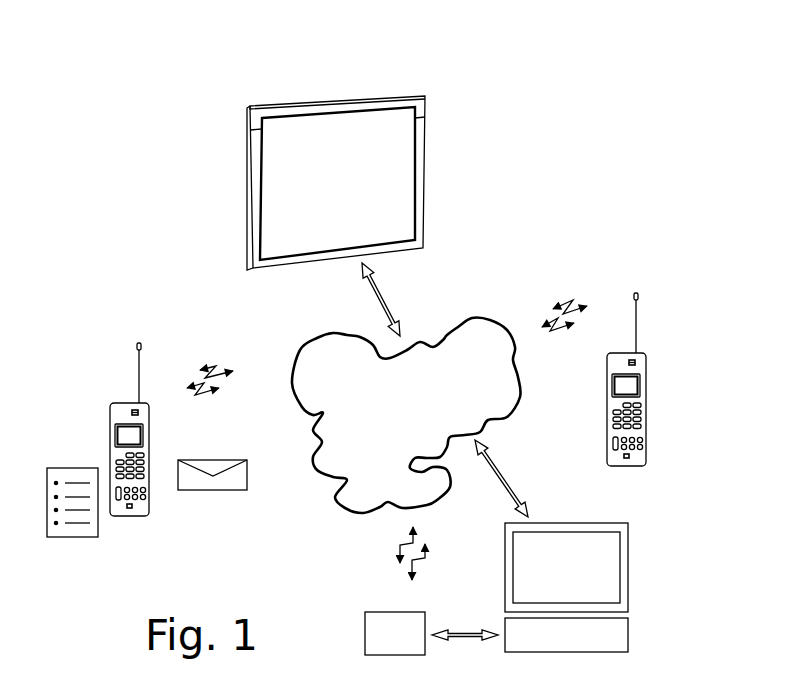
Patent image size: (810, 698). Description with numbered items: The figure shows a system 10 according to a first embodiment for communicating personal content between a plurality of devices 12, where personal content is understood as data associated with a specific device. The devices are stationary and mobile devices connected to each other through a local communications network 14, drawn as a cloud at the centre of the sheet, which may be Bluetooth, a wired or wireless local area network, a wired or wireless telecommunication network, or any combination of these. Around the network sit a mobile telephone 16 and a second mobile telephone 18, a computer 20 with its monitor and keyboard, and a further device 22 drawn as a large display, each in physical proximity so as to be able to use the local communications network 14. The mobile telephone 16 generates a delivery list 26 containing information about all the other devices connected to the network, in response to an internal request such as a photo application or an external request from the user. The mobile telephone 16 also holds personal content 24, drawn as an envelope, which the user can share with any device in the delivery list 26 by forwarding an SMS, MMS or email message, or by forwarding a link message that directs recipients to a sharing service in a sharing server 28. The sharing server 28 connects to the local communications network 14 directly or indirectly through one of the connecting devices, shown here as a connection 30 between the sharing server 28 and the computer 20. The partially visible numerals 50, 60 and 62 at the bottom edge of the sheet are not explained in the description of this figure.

The system 10 is at (210, 110).
The plurality of devices 12 is at (524, 241).
The local communications network 14 is at (357, 494).
The mobile telephone 16 is at (110, 403).
The mobile telephone 18 is at (641, 363).
The computer 20 is at (645, 539).
The device 22 is at (391, 96).
The personal content 24 is at (217, 465).
The delivery list 26 is at (65, 477).
The sharing server 28 is at (378, 620).
The connection 30 is at (475, 637).
The element 50 is at (157, 689).
The element 60 is at (235, 689).
The element 62 is at (740, 690).